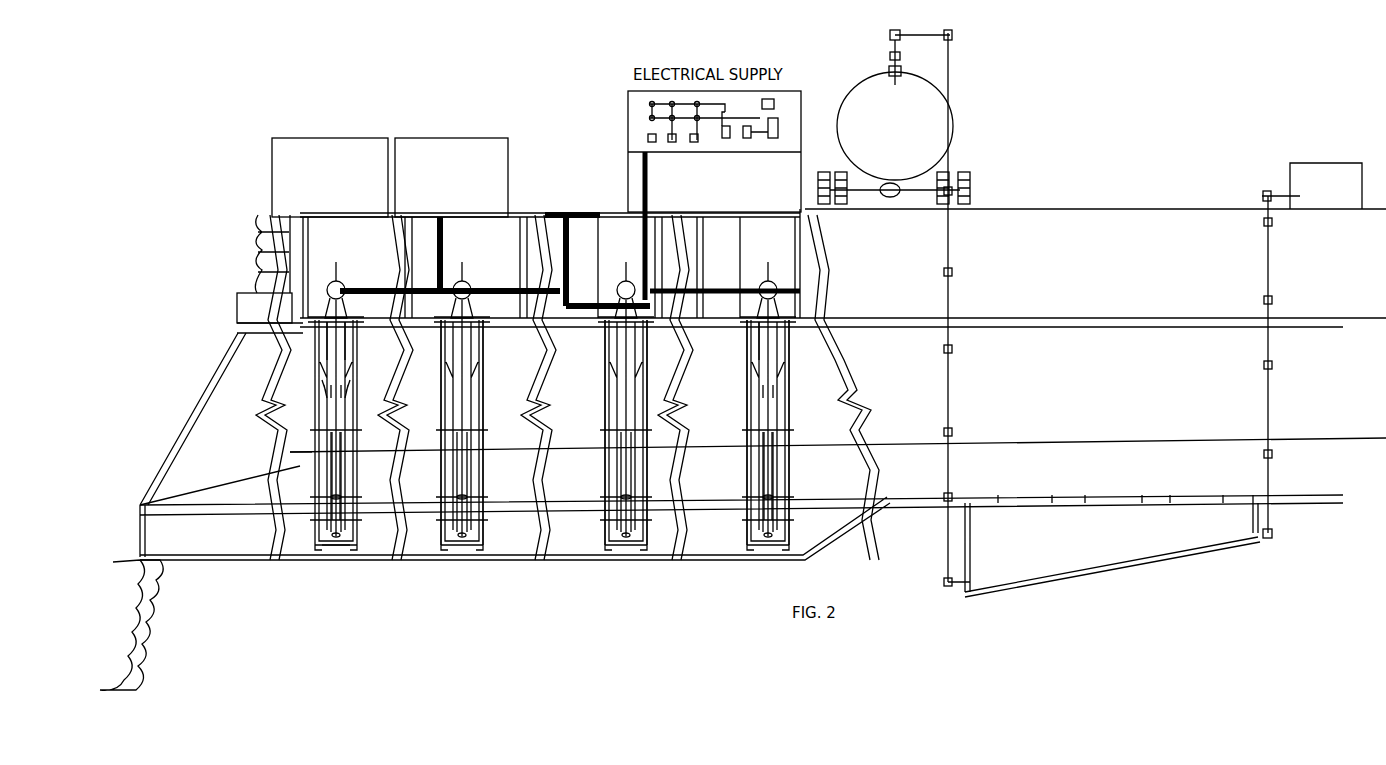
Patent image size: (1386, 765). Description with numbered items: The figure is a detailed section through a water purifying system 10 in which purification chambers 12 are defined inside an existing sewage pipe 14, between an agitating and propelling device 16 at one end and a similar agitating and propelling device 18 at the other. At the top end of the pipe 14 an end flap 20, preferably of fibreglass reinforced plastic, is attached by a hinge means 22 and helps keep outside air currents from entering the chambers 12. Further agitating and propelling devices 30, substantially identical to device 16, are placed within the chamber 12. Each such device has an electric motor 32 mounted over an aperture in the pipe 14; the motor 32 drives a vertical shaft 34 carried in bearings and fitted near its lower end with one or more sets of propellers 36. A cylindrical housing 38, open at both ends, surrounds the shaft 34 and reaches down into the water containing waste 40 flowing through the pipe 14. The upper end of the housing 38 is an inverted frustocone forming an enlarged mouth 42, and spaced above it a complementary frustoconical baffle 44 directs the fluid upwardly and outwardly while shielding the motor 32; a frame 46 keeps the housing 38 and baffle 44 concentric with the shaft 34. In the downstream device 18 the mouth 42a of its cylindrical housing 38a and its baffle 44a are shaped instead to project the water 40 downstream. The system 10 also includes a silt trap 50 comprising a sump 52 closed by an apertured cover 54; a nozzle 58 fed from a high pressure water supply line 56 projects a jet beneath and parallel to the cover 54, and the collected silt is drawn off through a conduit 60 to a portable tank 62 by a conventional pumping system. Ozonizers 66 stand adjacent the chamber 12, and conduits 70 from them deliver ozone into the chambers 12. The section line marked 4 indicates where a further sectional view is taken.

The section line 4 is at (618, 212).
The purifying system 10 is at (226, 568).
The purification chambers 12 is at (742, 565).
The sewage pipe 14 is at (852, 322).
The agitating and propelling device 16 is at (312, 437).
The agitating and propelling device 18 is at (792, 400).
The end flap 20 is at (215, 380).
The hinge means 22 is at (240, 330).
The agitating and propelling devices 30 is at (482, 351).
The motor 32 is at (343, 284).
The vertical shaft 34 is at (345, 325).
The propellers 36 is at (332, 548).
The cylindrical housing 38 is at (345, 470).
The cylindrical housing 38a is at (756, 432).
The water containing waste 40 is at (896, 452).
The enlarged mouth 42 is at (314, 400).
The mouth 42a is at (756, 382).
The frustoconical baffle 44 is at (350, 385).
The baffle 44a is at (748, 365).
The frame 46 is at (310, 480).
The silt trap 50 is at (1083, 540).
The sump 52 is at (1178, 538).
The apertured cover 54 is at (1248, 492).
The supply line 56 is at (1262, 366).
The nozzle 58 is at (1273, 533).
The conduit 60 is at (952, 376).
The portable tank 62 is at (846, 100).
The ozonizers 66 is at (430, 150).
The conduits 70 is at (446, 246).